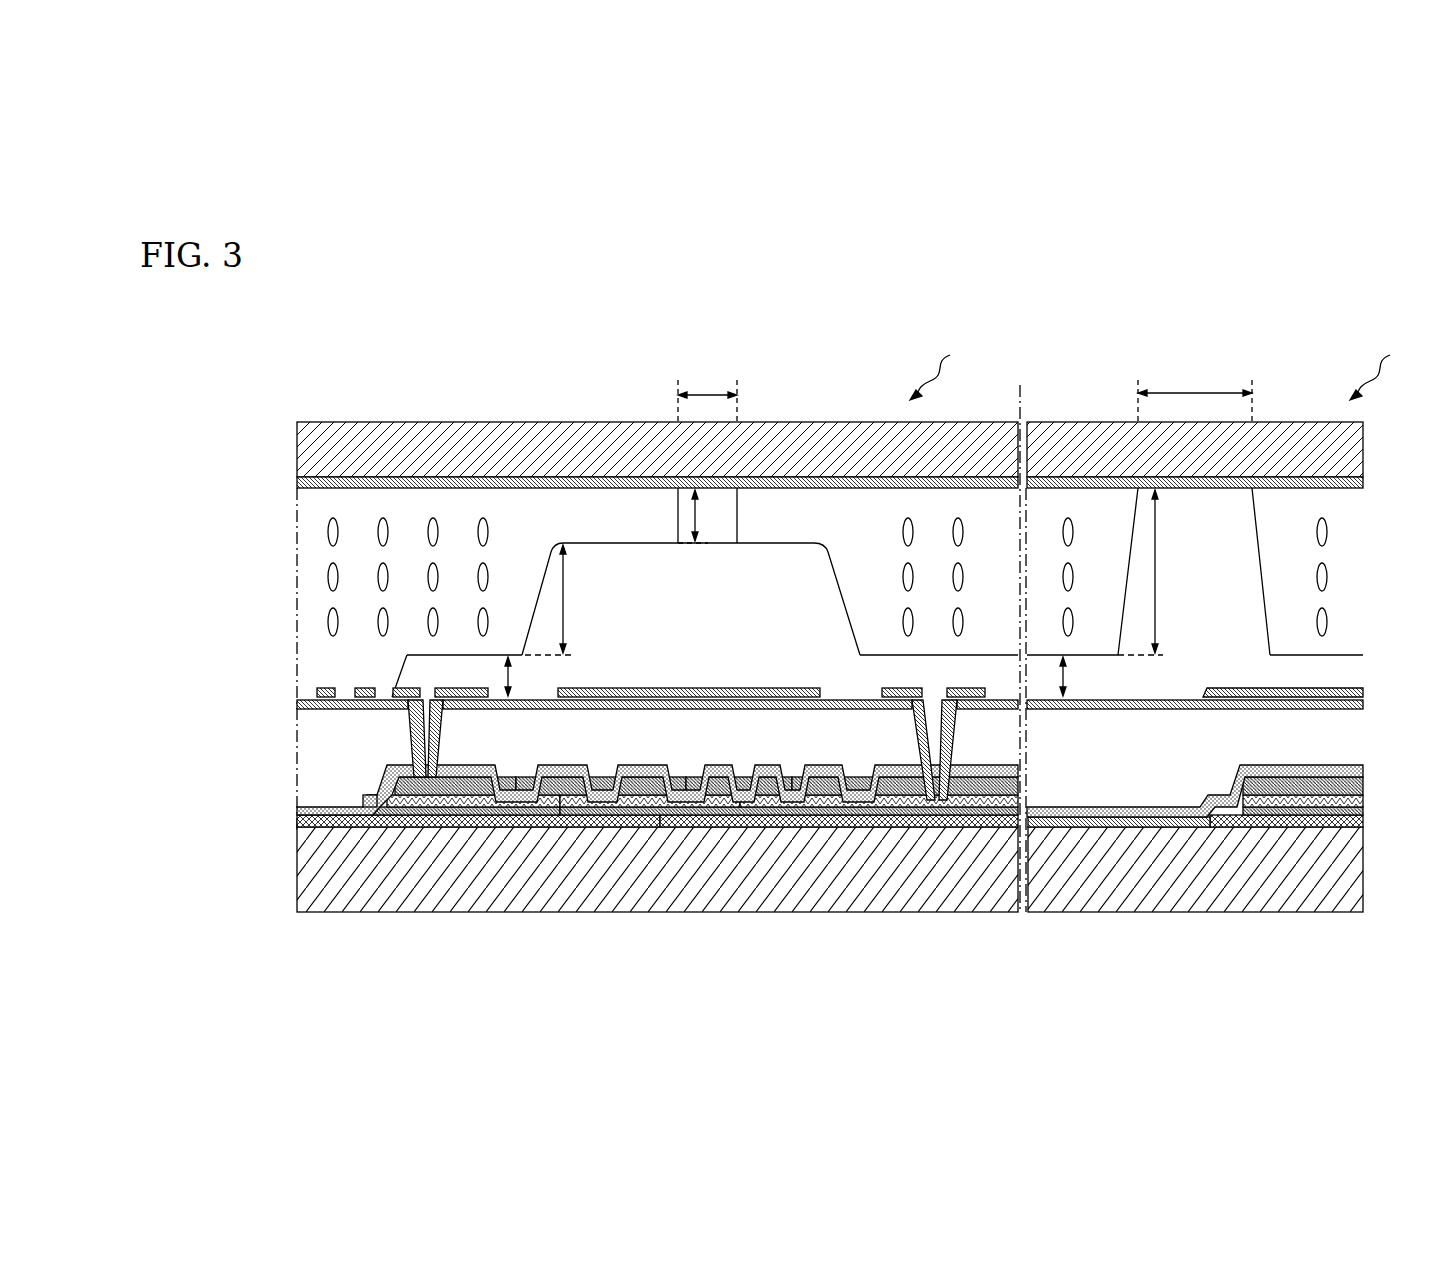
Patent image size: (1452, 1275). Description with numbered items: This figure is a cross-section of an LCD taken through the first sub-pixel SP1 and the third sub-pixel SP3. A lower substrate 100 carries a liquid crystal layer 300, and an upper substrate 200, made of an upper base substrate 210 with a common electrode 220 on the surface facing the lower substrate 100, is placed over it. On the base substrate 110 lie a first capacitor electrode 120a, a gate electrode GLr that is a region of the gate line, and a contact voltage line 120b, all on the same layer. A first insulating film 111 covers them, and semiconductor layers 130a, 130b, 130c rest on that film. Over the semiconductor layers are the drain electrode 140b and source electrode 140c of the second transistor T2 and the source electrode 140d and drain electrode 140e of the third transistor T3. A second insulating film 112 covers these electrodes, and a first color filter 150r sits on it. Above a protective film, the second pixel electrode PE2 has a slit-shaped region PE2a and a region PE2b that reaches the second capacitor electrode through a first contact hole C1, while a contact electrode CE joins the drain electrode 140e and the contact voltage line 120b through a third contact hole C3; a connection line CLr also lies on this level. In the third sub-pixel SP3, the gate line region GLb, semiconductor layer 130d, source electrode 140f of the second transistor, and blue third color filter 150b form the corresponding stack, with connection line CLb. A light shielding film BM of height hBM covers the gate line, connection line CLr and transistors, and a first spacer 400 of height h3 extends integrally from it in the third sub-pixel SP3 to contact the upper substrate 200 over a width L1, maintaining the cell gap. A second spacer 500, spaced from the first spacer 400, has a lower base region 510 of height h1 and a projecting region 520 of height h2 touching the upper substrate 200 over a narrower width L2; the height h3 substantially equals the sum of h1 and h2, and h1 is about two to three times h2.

The lower substrate 100 is at (829, 822).
The base substrate 110 is at (430, 830).
The first insulating film 111 is at (380, 805).
The second insulating film 112 is at (345, 812).
The first capacitor electrode 120a is at (442, 814).
The contact voltage line 120b is at (950, 815).
The semiconductor layer 130a is at (480, 802).
The semiconductor layer 130b is at (560, 802).
The semiconductor layer 130c is at (775, 802).
The semiconductor layer 130d is at (1272, 802).
The drain electrode of second transistor 140b is at (505, 790).
The source electrode of second transistor 140c is at (615, 790).
The source electrode of third transistor 140d is at (720, 790).
The drain electrode of third transistor 140e is at (815, 790).
The source electrode of second transistor in third sub-pixel 140f is at (1330, 790).
The first color filter 150r is at (897, 762).
The third color filter 150b is at (1070, 800).
The upper substrate 200 is at (829, 423).
The upper base substrate 210 is at (357, 432).
The common electrode 220 is at (401, 488).
The liquid crystal layer 300 is at (292, 488).
The first spacer 400 is at (1246, 525).
The second spacer 500 is at (691, 488).
The lower base region 510 is at (586, 552).
The projecting region 520 is at (683, 517).
The light shielding film BM is at (810, 657).
The connection line CLb is at (841, 822).
The connection line CLr is at (695, 690).
The gate electrode GLr is at (690, 812).
The gate line region GLb is at (1230, 812).
The contact electrode CE is at (933, 800).
The first contact hole C1 is at (426, 688).
The third contact hole C3 is at (931, 688).
The second transistor T2 is at (605, 748).
The third transistor T3 is at (769, 748).
The second pixel electrode PE2 is at (741, 663).
The slit region of second pixel electrode PE2a is at (771, 663).
The connection region of second pixel electrode PE2b is at (293, 671).
The first sub-pixel SP1 is at (951, 370).
The third sub-pixel SP3 is at (1392, 370).
The width of contacting area of first spacer L1 is at (1195, 394).
The width of contacting area of projecting region L2 is at (707, 394).
The height of lower base region h1 is at (558, 600).
The height of projecting region h2 is at (707, 515).
The height of first spacer h3 is at (1167, 571).
The height of light shielding film hBM is at (804, 677).